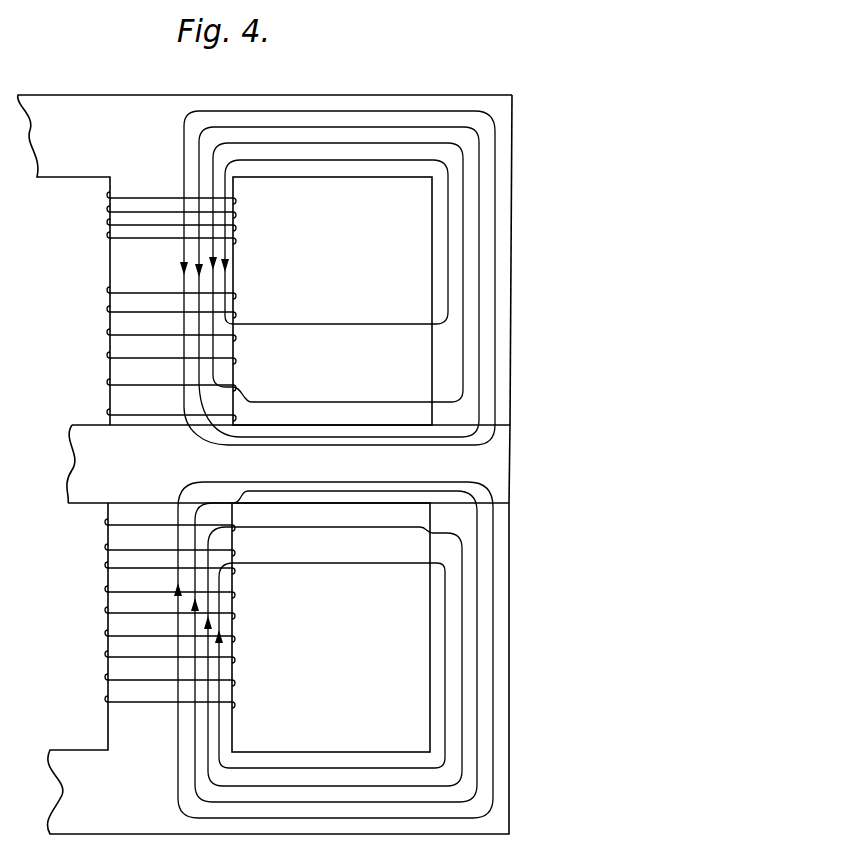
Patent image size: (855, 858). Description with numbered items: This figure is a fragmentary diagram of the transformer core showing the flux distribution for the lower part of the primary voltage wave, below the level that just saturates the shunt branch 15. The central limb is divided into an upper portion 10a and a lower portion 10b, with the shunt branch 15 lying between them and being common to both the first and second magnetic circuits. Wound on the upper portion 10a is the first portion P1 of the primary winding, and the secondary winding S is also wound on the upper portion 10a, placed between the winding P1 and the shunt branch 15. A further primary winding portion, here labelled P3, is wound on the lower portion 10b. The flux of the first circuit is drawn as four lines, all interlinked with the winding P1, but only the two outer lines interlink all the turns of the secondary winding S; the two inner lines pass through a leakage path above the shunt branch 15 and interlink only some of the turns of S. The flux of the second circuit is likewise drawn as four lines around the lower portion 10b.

The first portion of primary winding P1 is at (110, 206).
The upper portion of central limb 10a is at (110, 258).
The secondary winding S is at (110, 332).
The shunt branch 15 is at (480, 462).
The second primary winding P3 is at (110, 592).
The lower portion of central limb 10b is at (107, 723).